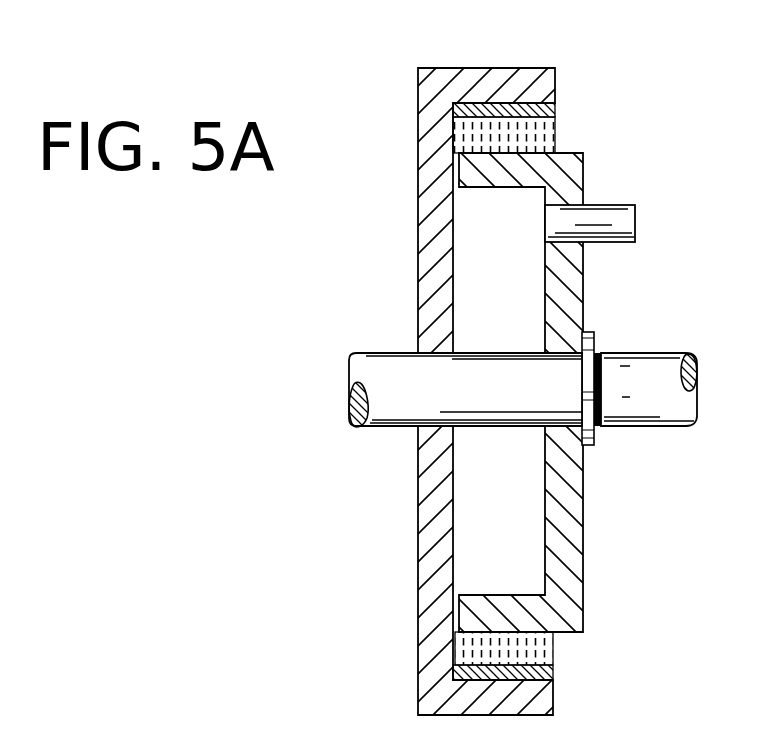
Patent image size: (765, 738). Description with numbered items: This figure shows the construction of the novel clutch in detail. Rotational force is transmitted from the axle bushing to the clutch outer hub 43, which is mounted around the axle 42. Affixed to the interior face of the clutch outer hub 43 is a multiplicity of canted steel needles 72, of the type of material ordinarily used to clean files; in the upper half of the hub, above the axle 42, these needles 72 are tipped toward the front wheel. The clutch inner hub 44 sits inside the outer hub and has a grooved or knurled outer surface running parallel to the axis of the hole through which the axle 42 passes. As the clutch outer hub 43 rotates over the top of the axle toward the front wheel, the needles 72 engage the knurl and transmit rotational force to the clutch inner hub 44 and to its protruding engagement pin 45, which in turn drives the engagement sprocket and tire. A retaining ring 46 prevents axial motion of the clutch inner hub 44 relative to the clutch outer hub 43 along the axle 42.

The axle 42 is at (385, 353).
The clutch outer hub 43 is at (517, 68).
The clutch inner hub 44 is at (583, 560).
The clutch engagement pin 45 is at (618, 205).
The retaining ring 46 is at (600, 446).
The needles 72 is at (553, 135).